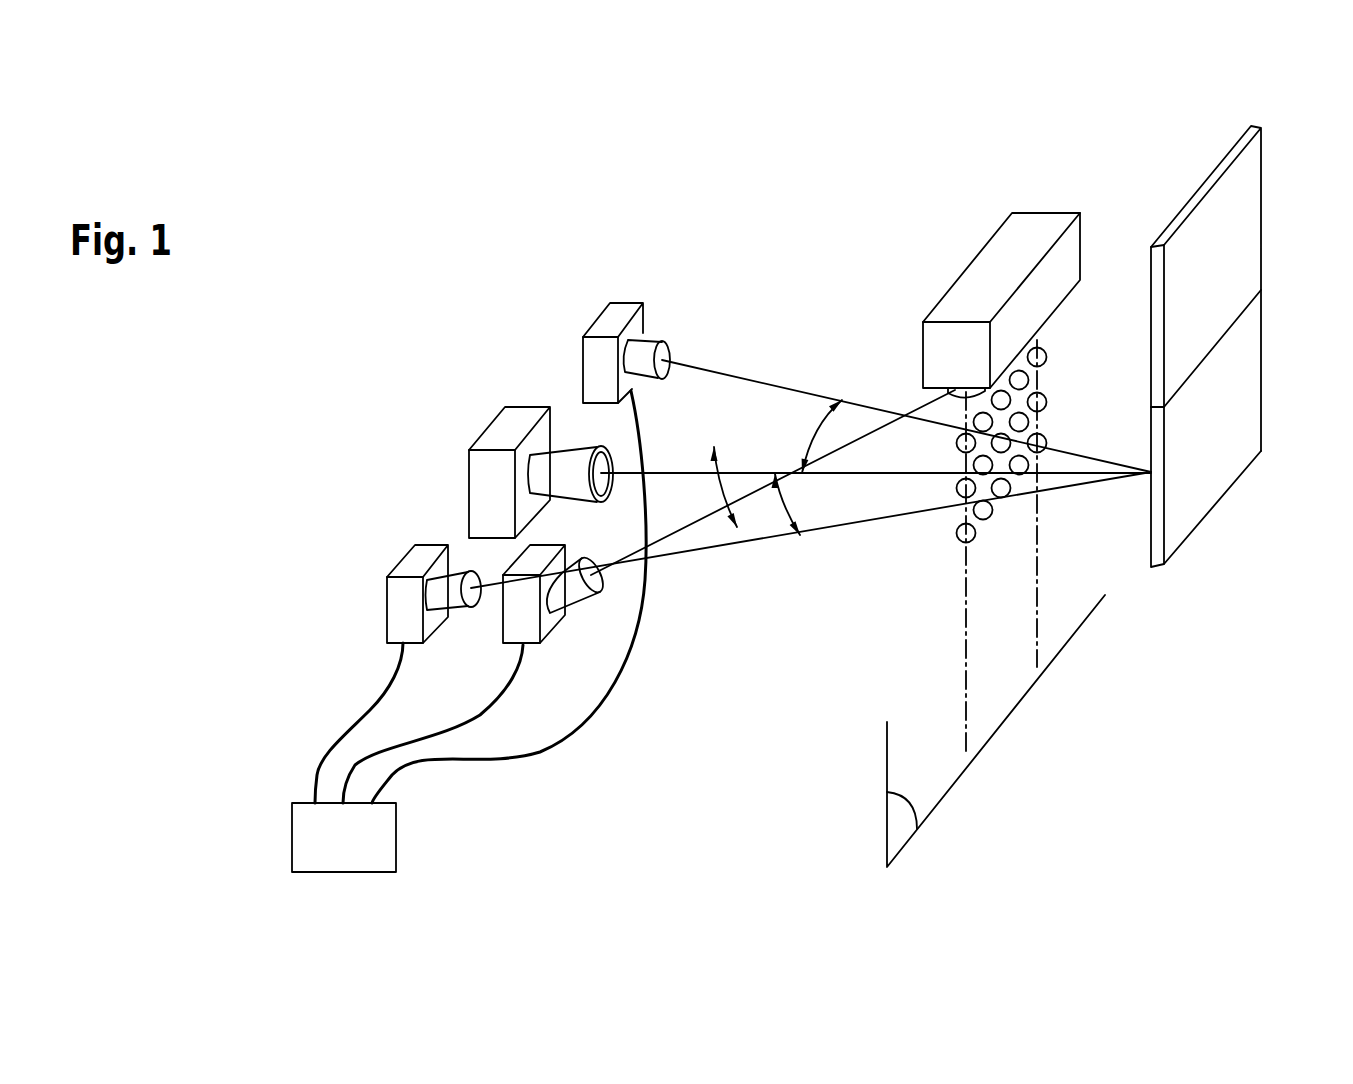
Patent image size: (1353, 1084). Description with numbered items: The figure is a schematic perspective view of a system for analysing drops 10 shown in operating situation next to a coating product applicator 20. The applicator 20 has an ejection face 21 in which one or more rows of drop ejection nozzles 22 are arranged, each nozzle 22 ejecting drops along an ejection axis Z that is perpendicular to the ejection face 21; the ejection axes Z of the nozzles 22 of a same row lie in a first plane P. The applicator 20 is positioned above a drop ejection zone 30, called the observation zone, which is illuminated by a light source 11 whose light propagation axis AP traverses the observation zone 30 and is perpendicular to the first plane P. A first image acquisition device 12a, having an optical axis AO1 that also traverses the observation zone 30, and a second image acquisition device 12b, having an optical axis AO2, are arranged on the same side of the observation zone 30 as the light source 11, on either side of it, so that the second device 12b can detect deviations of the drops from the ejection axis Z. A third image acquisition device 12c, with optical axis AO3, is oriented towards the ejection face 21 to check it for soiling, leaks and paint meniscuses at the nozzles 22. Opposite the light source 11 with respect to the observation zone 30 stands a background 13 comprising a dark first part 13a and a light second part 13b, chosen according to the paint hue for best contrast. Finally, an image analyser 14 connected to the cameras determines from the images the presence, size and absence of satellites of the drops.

The system for analysing drops 10 is at (450, 278).
The light source 11 is at (468, 473).
The first image acquisition device 12a is at (613, 303).
The second image acquisition device 12b is at (400, 562).
The third image acquisition device 12c is at (556, 622).
The background 13 is at (1233, 346).
The first part of the background 13a is at (1229, 263).
The second part of the background 13b is at (1230, 452).
The image analyser 14 is at (396, 826).
The coating product applicator 20 is at (982, 295).
The ejection face 21 is at (1081, 306).
The drop ejection nozzle 22 is at (957, 398).
The drop ejection zone 30 is at (998, 550).
The optical axis of the first image acquisition device AO1 is at (730, 375).
The optical axis of the second image acquisition device AO2 is at (770, 537).
The optical axis of the third image acquisition device AO3 is at (695, 521).
The optical axis of the light source AP is at (673, 473).
The ejection axis of the nozzles Z is at (966, 585).
The first plane P is at (996, 731).